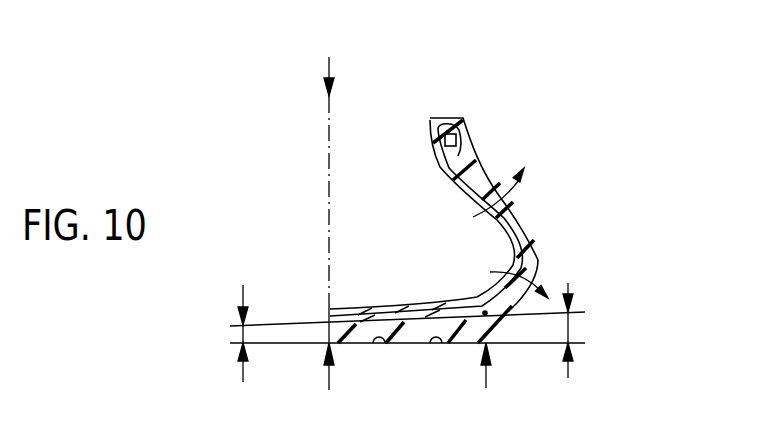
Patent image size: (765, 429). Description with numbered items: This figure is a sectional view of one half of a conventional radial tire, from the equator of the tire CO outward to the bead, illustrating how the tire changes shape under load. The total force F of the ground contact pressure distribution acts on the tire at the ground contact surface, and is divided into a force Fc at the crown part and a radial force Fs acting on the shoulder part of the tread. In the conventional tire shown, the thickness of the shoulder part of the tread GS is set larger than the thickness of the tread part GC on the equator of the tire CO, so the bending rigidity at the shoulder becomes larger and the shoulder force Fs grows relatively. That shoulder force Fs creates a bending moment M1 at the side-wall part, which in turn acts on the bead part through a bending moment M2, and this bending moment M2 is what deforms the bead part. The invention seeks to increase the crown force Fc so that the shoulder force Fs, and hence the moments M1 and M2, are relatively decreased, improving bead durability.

The total force of the ground contact pressure distribution F is at (337, 77).
The equator of the tire CO is at (327, 178).
The force at the crown part Fc is at (343, 368).
The radial force acting on the shoulder part Fs is at (498, 368).
The thickness of the tread part on the equator GC is at (243, 335).
The thickness of the shoulder part of the tread GS is at (570, 335).
The bending moment created at the side-wall part M1 is at (532, 270).
The bending moment acting on the bead part M2 is at (511, 178).